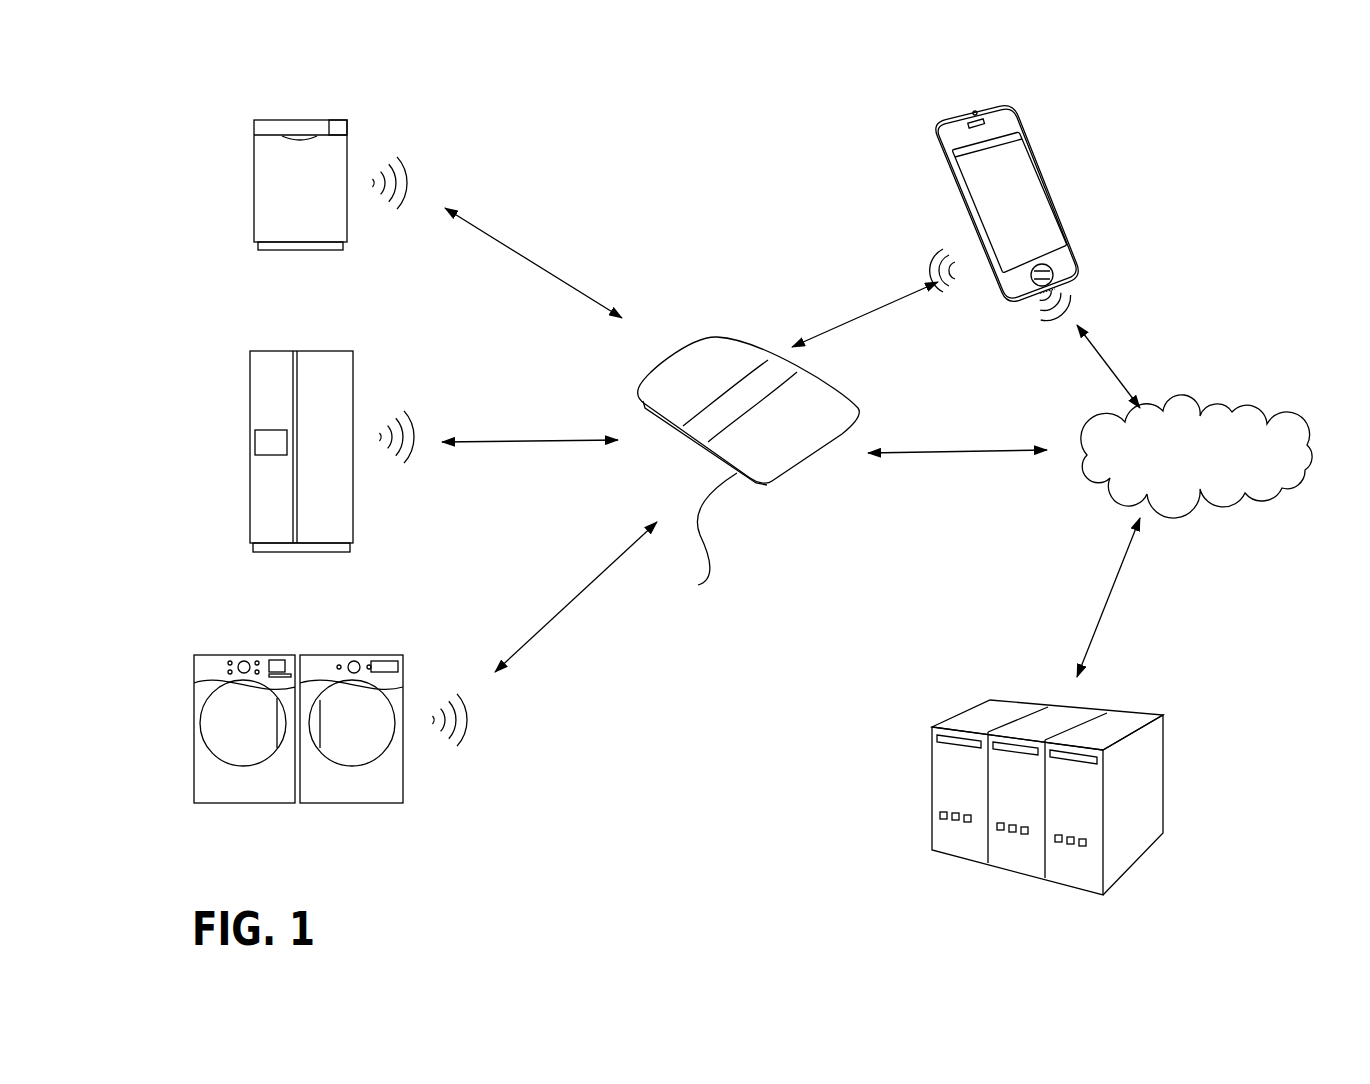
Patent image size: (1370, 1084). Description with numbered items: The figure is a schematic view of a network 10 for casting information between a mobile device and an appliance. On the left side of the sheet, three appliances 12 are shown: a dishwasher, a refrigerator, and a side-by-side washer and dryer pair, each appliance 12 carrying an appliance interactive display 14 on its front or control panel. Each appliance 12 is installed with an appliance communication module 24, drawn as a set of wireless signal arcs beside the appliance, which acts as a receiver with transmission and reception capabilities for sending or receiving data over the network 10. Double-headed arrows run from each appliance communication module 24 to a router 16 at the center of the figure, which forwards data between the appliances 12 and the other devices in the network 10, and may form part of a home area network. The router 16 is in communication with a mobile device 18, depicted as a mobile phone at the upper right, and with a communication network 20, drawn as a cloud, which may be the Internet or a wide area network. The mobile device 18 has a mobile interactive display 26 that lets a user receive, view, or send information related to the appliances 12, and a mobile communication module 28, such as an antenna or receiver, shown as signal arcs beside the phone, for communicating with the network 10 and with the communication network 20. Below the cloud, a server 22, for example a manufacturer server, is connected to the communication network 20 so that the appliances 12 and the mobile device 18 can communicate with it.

The network 10 is at (683, 138).
The appliance 12 is at (254, 220).
The appliance interactive display 14 is at (344, 128).
The router 16 is at (749, 468).
The mobile device 18 is at (1045, 175).
The communication network 20 is at (1183, 461).
The server 22 is at (1163, 778).
The appliance communication module 24 is at (428, 182).
The mobile interactive display 26 is at (1007, 217).
The mobile communication module 28 is at (948, 296).